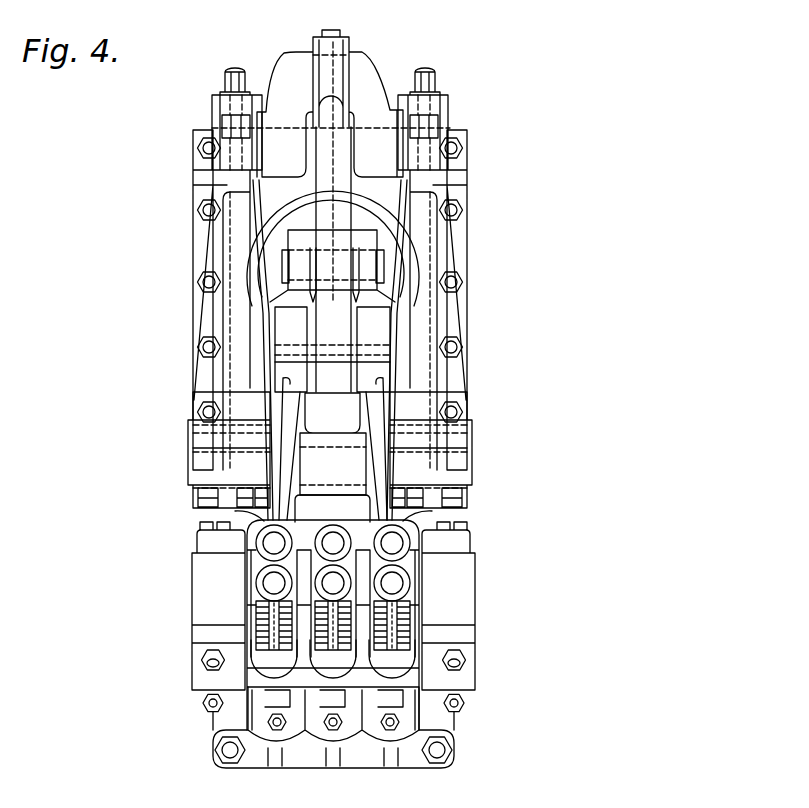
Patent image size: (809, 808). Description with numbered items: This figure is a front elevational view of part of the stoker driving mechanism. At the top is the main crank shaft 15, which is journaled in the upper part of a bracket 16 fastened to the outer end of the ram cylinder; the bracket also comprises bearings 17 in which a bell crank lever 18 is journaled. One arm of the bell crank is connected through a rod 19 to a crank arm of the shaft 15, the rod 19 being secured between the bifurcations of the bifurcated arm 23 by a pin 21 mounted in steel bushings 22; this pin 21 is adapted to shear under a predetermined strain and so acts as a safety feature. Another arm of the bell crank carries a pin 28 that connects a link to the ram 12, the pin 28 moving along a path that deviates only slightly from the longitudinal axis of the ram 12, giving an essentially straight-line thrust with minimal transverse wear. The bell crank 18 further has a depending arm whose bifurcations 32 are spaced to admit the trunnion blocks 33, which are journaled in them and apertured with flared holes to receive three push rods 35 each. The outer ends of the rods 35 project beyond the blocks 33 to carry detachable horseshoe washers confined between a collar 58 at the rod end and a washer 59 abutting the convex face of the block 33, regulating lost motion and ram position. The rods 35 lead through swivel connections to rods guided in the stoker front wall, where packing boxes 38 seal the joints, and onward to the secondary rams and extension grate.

The ram 12 is at (372, 215).
The main crank shaft 15 is at (368, 62).
The bracket 16 is at (197, 241).
The bearings 17 is at (211, 469).
The bell crank lever 18 is at (290, 466).
The rod 19 is at (334, 194).
The pin 21 is at (378, 351).
The steel bushings 22 is at (355, 347).
The bifurcated arm 23 is at (368, 371).
The pin 28 is at (283, 248).
The bifurcations 32 is at (235, 513).
The blocks 33 is at (333, 625).
The push rods 35 is at (333, 587).
The packing boxes 38 is at (379, 735).
The collar 58 is at (331, 525).
The washer 59 is at (322, 654).